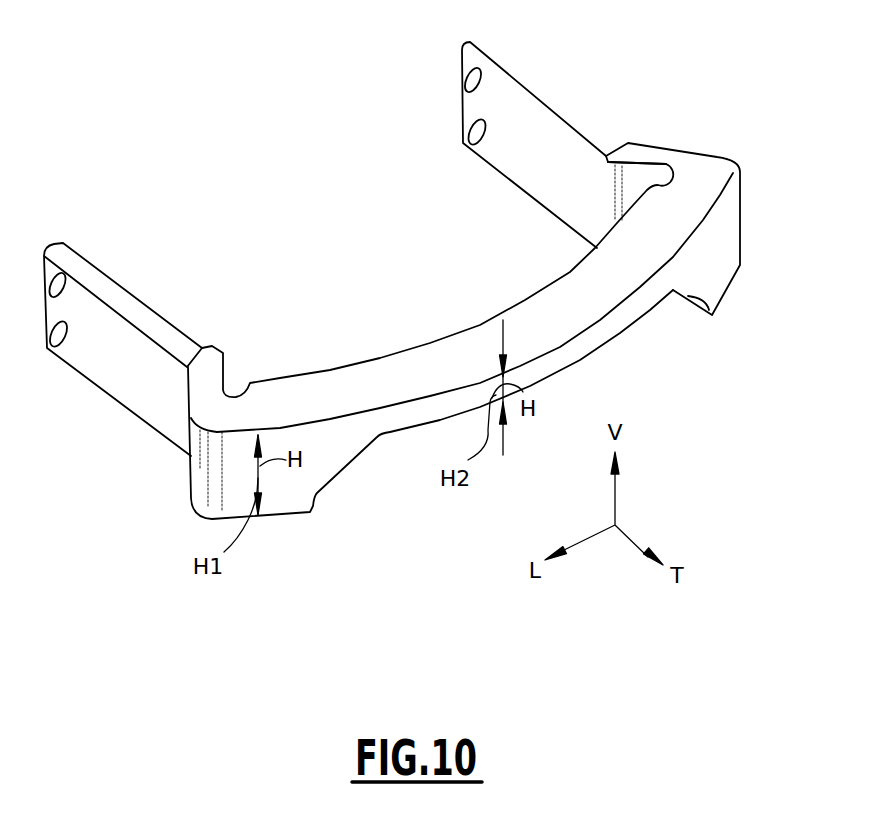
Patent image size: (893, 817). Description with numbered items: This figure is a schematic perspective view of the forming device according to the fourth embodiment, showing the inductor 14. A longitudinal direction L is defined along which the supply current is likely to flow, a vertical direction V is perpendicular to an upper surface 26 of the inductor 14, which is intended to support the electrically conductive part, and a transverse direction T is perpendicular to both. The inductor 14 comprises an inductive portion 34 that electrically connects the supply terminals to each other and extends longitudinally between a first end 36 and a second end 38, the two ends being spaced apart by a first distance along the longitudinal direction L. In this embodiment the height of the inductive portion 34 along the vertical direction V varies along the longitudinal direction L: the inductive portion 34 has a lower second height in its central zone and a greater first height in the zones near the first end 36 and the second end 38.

The inductor 14 is at (313, 205).
The upper surface 26 is at (642, 253).
The inductive portion 34 is at (400, 383).
The first end 36 is at (196, 447).
The second end 38 is at (747, 215).